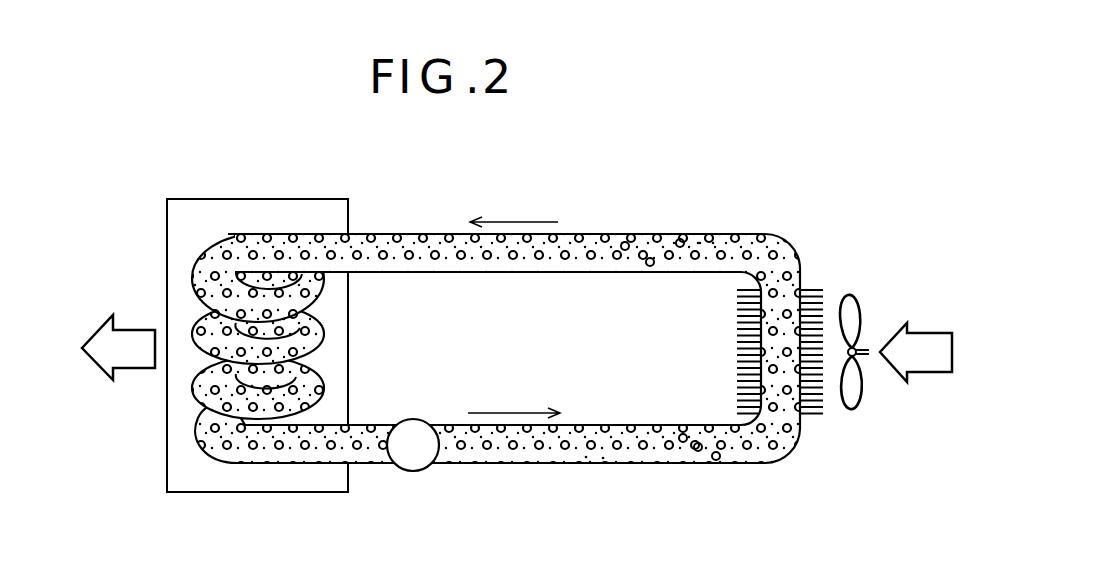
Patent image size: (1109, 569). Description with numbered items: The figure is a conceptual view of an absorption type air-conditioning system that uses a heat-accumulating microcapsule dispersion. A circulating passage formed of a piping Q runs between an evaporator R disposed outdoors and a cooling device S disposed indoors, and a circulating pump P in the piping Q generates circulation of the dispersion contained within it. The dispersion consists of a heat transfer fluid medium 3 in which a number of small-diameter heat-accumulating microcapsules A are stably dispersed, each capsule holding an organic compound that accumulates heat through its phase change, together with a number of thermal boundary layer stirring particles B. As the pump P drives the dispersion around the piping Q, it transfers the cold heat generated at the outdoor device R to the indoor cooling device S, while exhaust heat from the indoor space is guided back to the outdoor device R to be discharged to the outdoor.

The evaporator R is at (263, 187).
The piping Q is at (404, 233).
The small-diameter heat-accumulating microcapsules A is at (713, 242).
The thermal boundary layer stirring particles B is at (679, 241).
The cooling device S is at (864, 279).
The circulating pump P is at (413, 445).
The heat transfer fluid medium 3 is at (493, 456).